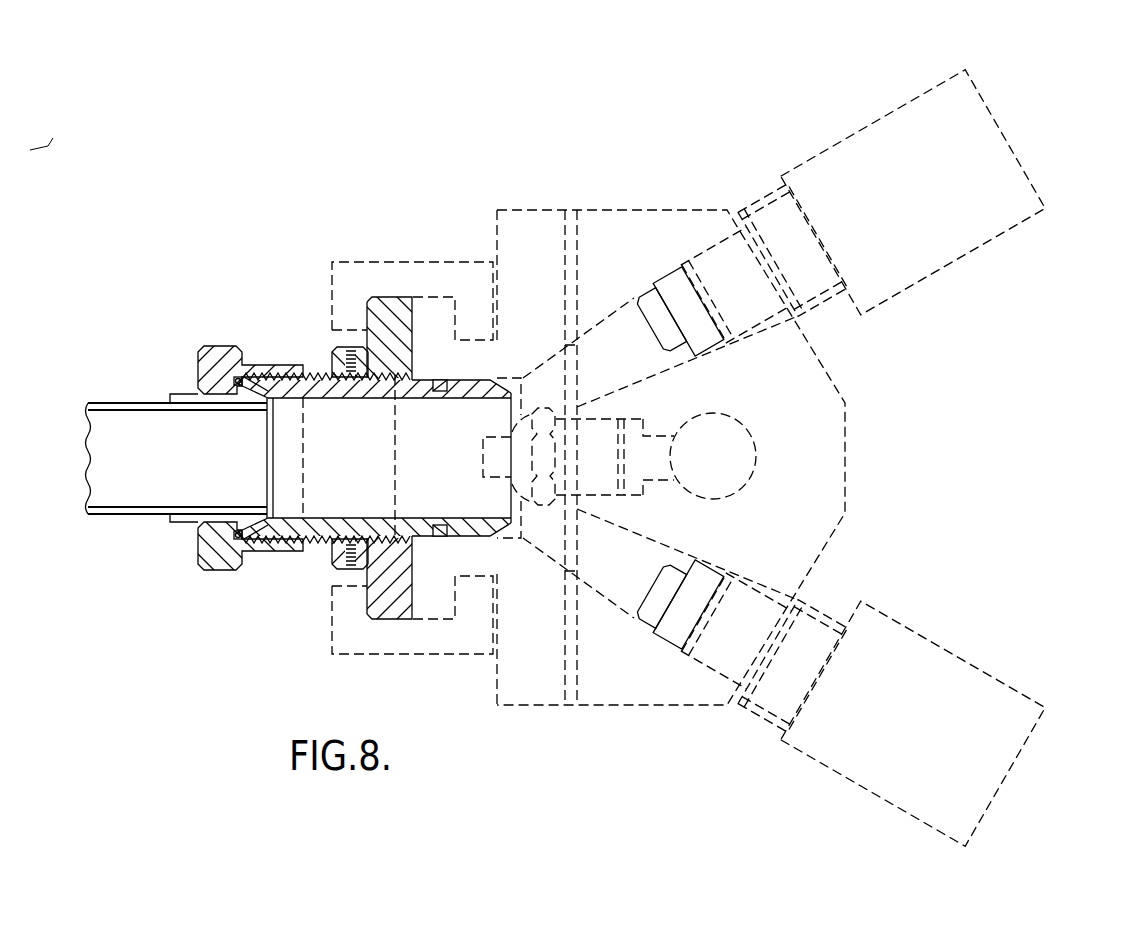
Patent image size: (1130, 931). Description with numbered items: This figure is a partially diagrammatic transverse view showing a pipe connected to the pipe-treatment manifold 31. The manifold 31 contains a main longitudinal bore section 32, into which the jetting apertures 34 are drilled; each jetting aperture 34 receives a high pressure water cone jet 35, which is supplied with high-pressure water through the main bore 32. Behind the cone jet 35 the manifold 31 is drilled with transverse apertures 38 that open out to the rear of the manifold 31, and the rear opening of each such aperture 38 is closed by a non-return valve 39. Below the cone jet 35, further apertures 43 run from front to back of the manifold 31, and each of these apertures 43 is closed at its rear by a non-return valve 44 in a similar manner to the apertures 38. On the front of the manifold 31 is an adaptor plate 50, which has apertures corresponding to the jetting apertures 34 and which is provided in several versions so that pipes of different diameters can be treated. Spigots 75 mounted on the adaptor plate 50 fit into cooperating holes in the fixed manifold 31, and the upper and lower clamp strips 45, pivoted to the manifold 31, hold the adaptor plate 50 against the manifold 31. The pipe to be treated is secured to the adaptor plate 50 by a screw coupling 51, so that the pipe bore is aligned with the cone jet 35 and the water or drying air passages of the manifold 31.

The pipe-treatment manifold 31 is at (585, 188).
The main longitudinal bore section 32 is at (728, 446).
The jetting apertures 34 is at (655, 438).
The high pressure water cone jets 35 is at (485, 461).
The transverse apertures 38 is at (699, 268).
The non-return valve 39 is at (877, 143).
The further apertures 43 is at (643, 556).
The non-return valve 44 is at (903, 663).
The clamp strips 45 is at (350, 282).
The adaptor plate 50 is at (395, 320).
The screw couplings 51 is at (330, 362).
The spigots 75 is at (460, 386).